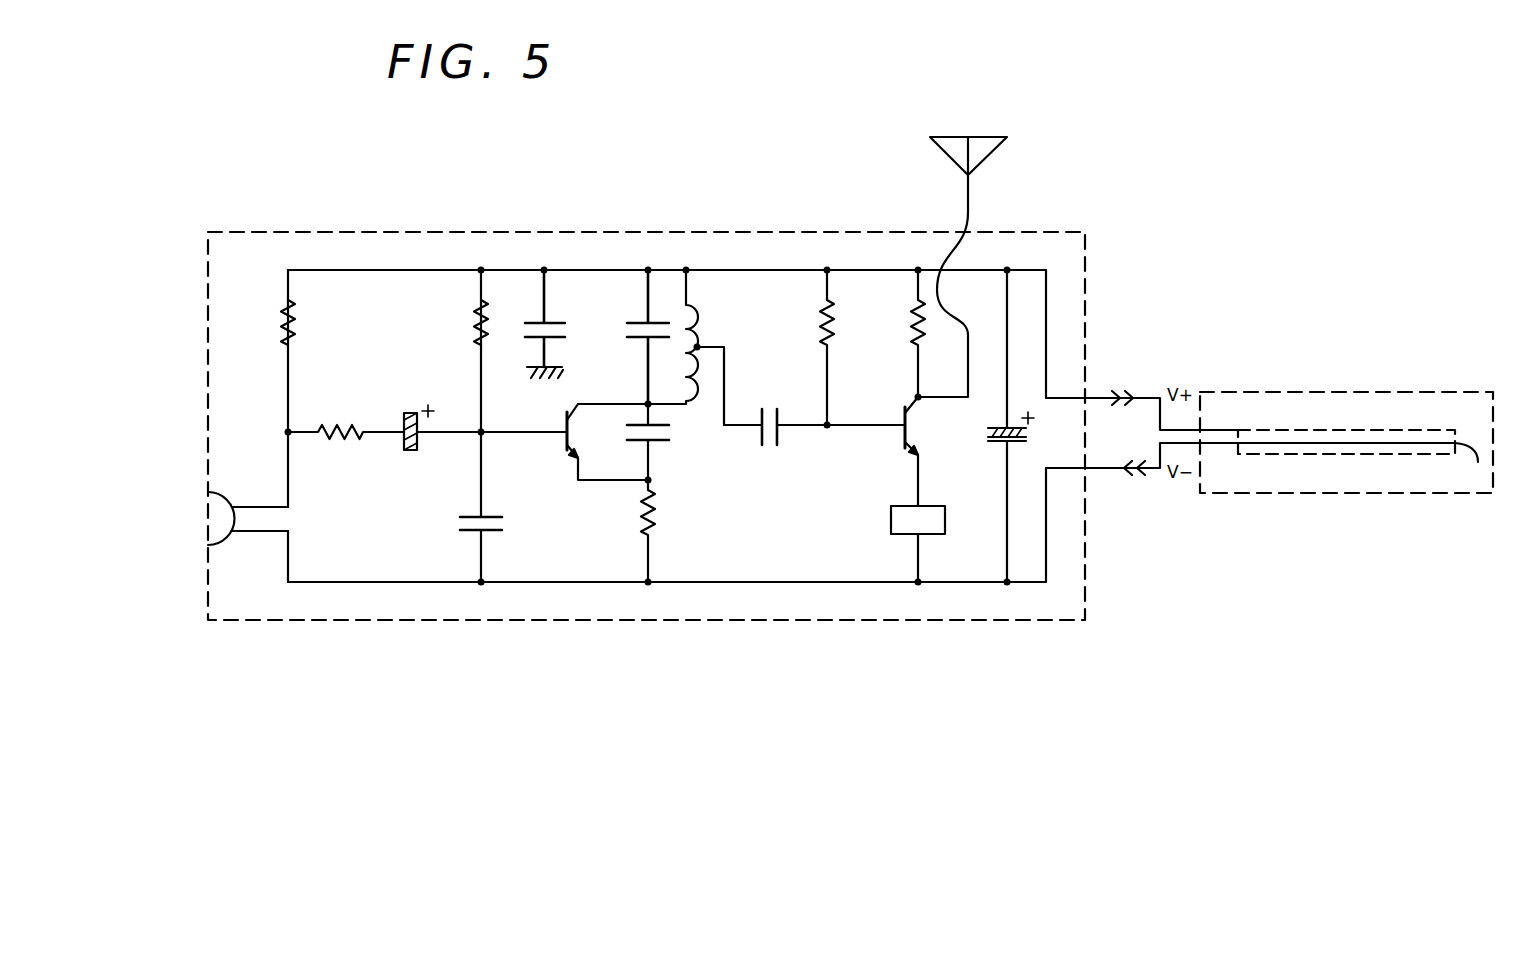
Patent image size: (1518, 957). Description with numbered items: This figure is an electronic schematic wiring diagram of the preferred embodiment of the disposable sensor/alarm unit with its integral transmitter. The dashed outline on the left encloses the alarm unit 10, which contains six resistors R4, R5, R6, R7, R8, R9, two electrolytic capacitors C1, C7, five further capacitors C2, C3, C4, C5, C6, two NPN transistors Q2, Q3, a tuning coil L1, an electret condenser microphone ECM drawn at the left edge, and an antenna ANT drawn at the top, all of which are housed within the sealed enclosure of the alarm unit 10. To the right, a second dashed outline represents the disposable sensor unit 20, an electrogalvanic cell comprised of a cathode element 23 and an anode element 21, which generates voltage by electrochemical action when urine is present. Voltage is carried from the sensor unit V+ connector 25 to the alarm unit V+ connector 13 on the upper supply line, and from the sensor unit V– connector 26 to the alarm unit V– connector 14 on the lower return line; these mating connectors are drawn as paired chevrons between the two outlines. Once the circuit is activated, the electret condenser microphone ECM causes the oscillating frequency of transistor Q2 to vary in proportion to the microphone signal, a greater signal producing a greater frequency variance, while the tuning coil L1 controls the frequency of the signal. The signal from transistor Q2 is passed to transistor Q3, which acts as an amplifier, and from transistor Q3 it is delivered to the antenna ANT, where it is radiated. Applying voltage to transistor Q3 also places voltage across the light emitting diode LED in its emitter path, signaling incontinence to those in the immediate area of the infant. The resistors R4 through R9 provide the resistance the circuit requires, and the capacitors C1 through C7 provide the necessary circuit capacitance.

The alarm unit 10 is at (435, 232).
The alarm unit V+ connector 13 is at (1114, 398).
The alarm unit V– connector 14 is at (1122, 468).
The disposable sensor unit 20 is at (1275, 392).
The anode element 21 is at (1466, 463).
The cathode element 23 is at (1290, 430).
The sensor unit V+ connector 25 is at (1136, 398).
The sensor unit V– connector 26 is at (1147, 468).
The resistor R4 is at (284, 324).
The resistor R5 is at (352, 440).
The resistor R6 is at (477, 324).
The resistor R7 is at (642, 512).
The resistor R8 is at (822, 323).
The resistor R9 is at (912, 323).
The electrolytic capacitor C1 is at (414, 455).
The capacitor C2 is at (458, 524).
The capacitor C3 is at (557, 325).
The capacitor C4 is at (640, 341).
The capacitor C5 is at (670, 430).
The capacitor C6 is at (770, 450).
The electrolytic capacitor C7 is at (1003, 442).
The tuning coil L1 is at (704, 337).
The NPN transistor Q2 is at (571, 430).
The NPN transistor Q3 is at (911, 425).
The light emitting diode LED is at (918, 544).
The antenna ANT is at (1007, 132).
The electret condenser microphone ECM is at (206, 516).